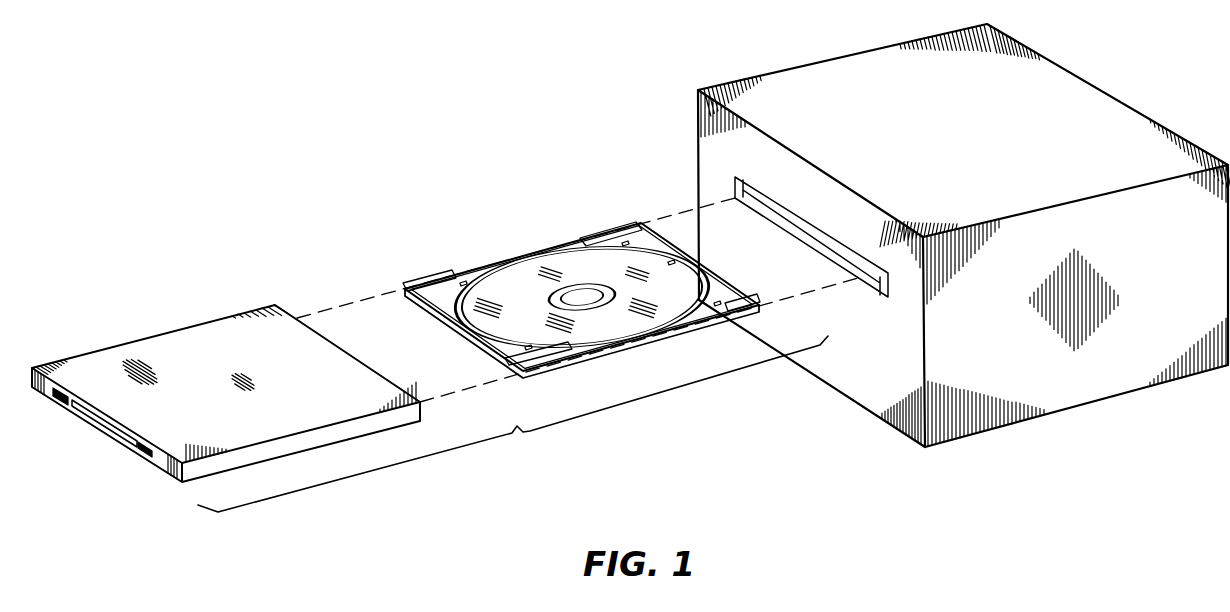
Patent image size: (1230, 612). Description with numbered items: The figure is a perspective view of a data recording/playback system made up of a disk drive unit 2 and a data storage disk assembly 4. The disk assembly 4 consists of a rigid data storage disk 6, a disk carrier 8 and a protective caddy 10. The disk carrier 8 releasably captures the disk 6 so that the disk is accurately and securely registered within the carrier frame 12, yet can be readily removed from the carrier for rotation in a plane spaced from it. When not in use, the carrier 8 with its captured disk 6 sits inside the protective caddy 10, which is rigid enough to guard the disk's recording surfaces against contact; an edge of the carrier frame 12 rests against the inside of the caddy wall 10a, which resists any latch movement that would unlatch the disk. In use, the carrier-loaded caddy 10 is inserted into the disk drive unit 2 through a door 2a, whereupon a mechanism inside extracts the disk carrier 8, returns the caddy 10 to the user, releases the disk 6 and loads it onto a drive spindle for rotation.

The disk drive unit 2 is at (898, 112).
The door 2a is at (870, 291).
The data storage disk assembly 4 is at (527, 432).
The data storage disk 6 is at (524, 295).
The disk carrier 8 is at (581, 307).
The protective caddy 10 is at (226, 411).
The caddy wall 10a is at (153, 468).
The carrier frame 12 is at (693, 324).